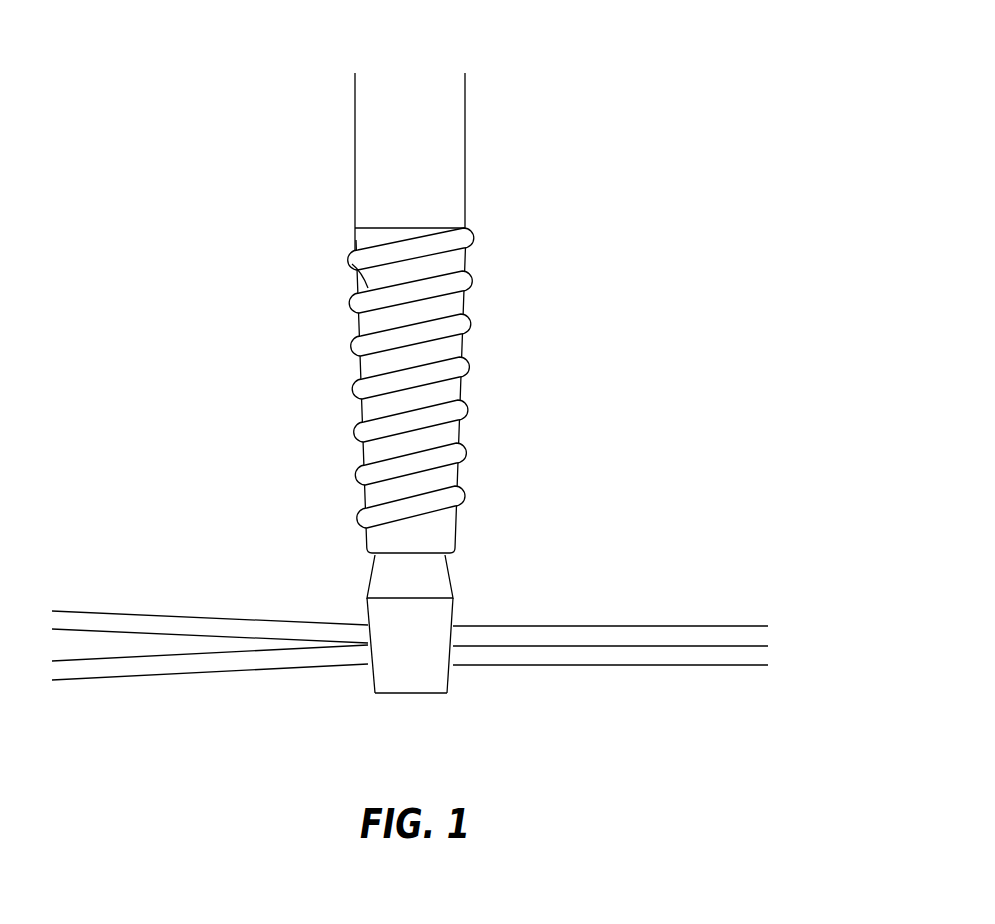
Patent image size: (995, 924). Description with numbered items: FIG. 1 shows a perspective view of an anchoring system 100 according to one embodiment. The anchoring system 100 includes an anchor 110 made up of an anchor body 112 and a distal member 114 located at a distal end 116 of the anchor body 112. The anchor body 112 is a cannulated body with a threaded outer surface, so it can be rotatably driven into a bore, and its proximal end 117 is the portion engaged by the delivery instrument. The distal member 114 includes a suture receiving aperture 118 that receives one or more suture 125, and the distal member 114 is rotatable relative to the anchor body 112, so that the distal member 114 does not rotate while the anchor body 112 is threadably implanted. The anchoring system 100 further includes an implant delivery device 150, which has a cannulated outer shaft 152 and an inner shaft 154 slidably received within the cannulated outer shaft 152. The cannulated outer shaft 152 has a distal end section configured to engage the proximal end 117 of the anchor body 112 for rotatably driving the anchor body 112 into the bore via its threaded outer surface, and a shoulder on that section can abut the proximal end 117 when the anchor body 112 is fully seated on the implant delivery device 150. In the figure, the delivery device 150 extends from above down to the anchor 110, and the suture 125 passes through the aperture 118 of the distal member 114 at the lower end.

The anchoring system 100 is at (560, 106).
The anchor 110 is at (339, 349).
The anchor body 112 is at (350, 266).
The distal member 114 is at (415, 664).
The distal end 116 is at (436, 580).
The proximal end 117 is at (472, 232).
The suture receiving aperture 118 is at (454, 655).
The suture 125 is at (652, 636).
The implant delivery device 150 is at (372, 124).
The cannulated outer shaft 152 is at (372, 164).
The inner shaft 154 is at (408, 694).